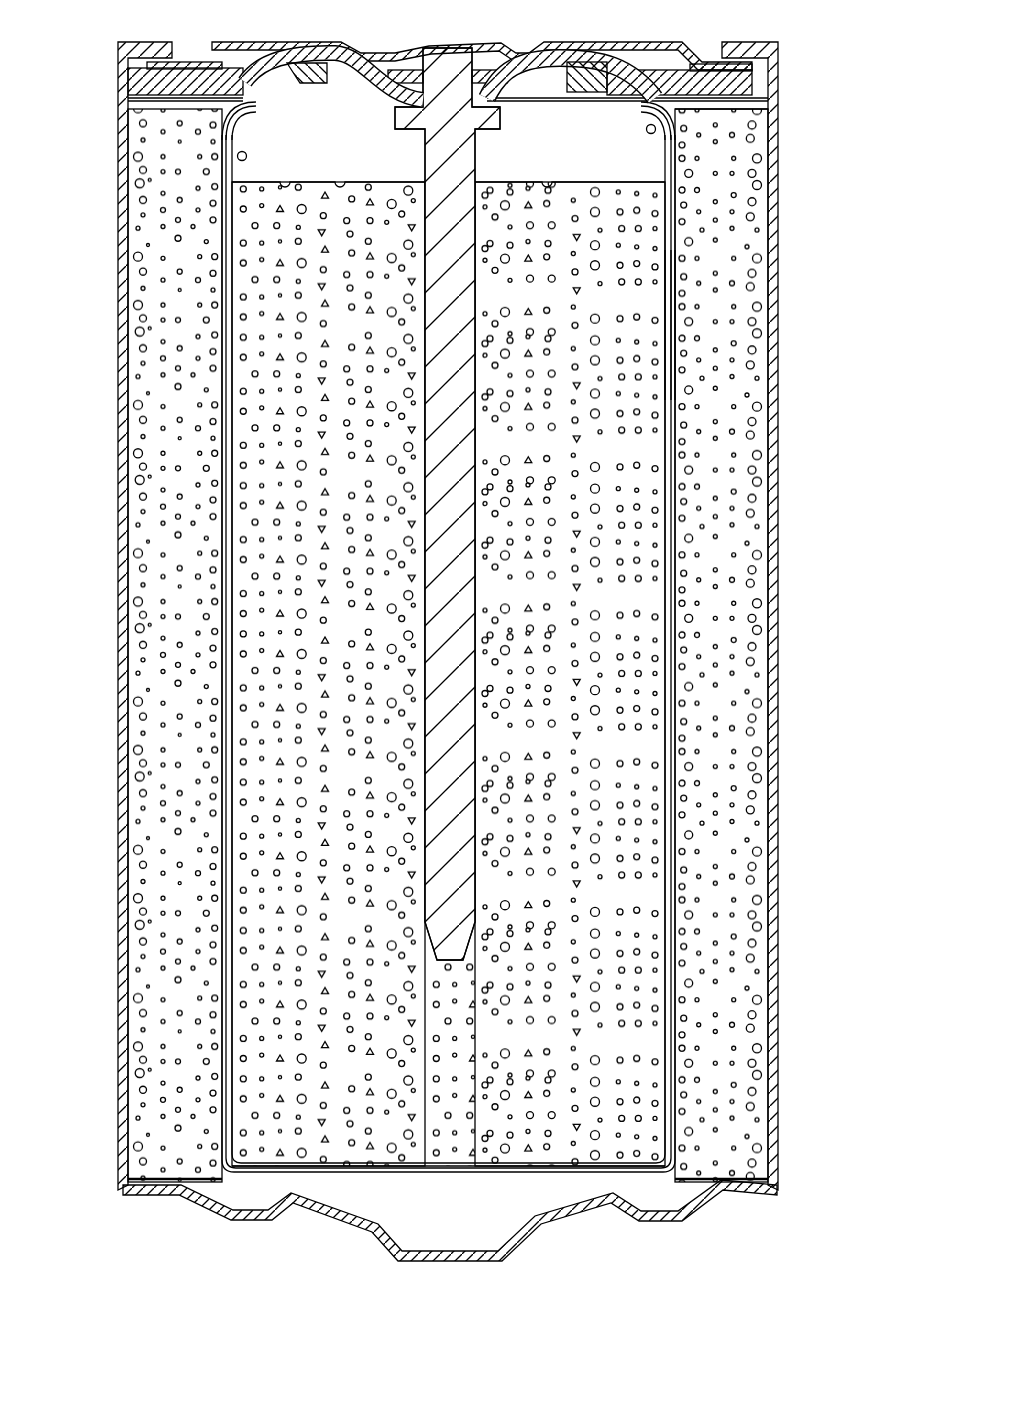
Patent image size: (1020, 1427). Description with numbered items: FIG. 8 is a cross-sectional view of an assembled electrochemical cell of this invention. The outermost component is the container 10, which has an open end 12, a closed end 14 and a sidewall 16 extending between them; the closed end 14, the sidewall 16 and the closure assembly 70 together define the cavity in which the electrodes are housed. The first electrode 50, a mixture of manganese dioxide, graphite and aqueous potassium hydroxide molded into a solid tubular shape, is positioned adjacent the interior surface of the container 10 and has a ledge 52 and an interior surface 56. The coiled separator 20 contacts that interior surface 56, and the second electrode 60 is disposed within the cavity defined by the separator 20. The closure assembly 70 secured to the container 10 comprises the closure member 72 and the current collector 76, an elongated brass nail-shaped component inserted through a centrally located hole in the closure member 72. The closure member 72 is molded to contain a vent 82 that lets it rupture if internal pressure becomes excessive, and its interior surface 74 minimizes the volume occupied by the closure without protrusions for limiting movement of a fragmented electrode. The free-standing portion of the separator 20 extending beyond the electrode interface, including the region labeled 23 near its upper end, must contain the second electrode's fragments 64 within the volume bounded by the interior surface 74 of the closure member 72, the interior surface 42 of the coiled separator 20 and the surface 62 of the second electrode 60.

The container 10 is at (102, 598).
The open end 12 is at (180, 45).
The closed end 14 is at (160, 1192).
The sidewall 16 is at (122, 876).
The separator 20 is at (672, 362).
The separator top fold 23 is at (636, 106).
The interior surface of the coiled separator 42 is at (238, 128).
The first electrode 50 is at (720, 712).
The ledge 52 is at (716, 128).
The interior surface 56 is at (676, 254).
The second electrode 60 is at (563, 507).
The surface of the second electrode 62 is at (493, 182).
The second electrode's fragments 64 is at (287, 182).
The closure assembly 70 is at (103, 94).
The closure member 72 is at (240, 98).
The interior surface of closure member 74 is at (372, 90).
The current collector 76 is at (458, 778).
The vent 82 is at (588, 62).